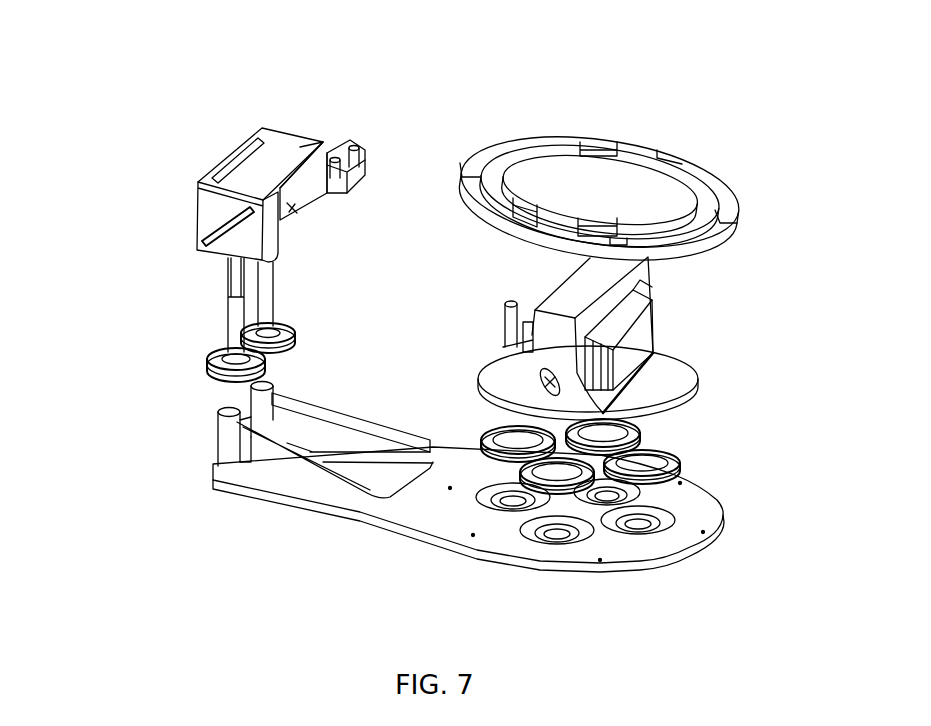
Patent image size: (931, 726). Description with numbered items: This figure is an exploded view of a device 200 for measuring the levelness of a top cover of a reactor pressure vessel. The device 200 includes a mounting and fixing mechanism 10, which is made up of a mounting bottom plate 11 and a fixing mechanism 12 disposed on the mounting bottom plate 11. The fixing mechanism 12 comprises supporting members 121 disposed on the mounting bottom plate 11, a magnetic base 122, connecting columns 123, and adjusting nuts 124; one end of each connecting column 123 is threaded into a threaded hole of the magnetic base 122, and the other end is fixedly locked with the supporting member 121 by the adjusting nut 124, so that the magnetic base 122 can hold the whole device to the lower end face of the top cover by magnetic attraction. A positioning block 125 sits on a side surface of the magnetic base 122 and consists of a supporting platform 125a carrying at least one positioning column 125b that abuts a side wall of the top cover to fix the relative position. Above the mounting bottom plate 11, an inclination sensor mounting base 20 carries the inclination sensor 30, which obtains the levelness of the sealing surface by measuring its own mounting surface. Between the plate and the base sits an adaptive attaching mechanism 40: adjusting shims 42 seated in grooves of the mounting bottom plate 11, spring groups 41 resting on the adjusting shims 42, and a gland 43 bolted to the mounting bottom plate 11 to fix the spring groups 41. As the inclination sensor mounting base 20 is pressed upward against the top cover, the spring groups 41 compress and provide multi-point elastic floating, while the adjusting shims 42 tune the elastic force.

The device for measuring levelness of a top cover of a reactor pressure vessel 200 is at (176, 82).
The mounting and fixing mechanism 10 is at (64, 247).
The mounting bottom plate 11 is at (220, 480).
The fixing mechanism 12 is at (100, 100).
The supporting member 121 is at (227, 443).
The magnetic base 122 is at (227, 147).
The connecting column 123 is at (230, 300).
The adjusting nut 124 is at (203, 352).
The positioning block 125 is at (232, 72).
The supporting platform 125a is at (293, 137).
The positioning column 125b is at (345, 150).
The inclination sensor mounting base 20 is at (633, 290).
The inclination sensor 30 is at (637, 358).
The adaptive attaching mechanism 40 is at (797, 395).
The spring groups 41 is at (677, 460).
The adjusting shims 42 is at (640, 530).
The gland 43 is at (500, 165).